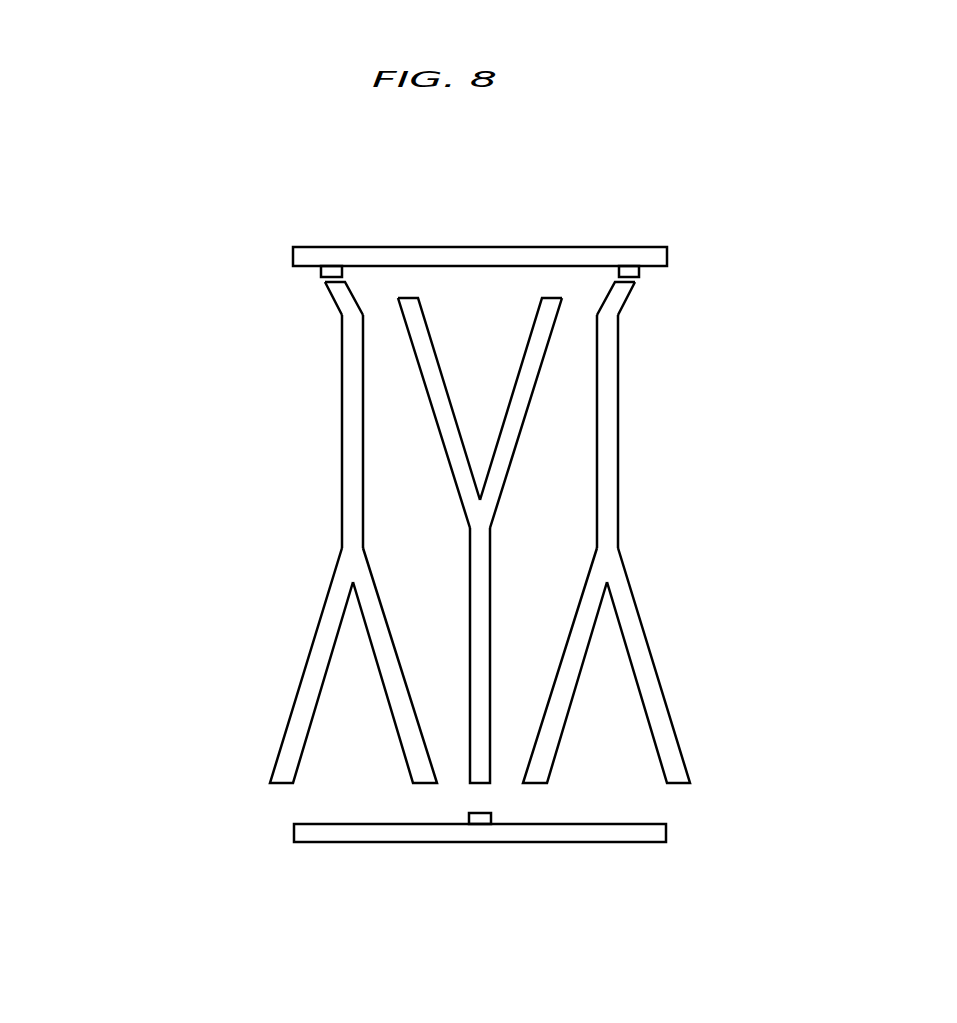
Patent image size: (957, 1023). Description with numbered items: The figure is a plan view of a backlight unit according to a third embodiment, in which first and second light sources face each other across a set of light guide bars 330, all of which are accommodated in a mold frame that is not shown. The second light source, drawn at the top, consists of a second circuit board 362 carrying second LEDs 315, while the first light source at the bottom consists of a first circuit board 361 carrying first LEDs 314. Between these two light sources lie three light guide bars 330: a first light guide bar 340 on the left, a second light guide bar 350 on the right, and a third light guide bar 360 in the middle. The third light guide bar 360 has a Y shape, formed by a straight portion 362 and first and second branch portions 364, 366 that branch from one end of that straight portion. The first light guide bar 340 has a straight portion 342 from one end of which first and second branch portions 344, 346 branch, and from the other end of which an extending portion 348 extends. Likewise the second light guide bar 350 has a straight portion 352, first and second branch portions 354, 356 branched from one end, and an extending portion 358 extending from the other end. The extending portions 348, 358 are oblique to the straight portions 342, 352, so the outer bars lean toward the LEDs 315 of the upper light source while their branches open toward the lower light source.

The first LEDs 314 is at (480, 818).
The second LEDs 315 is at (633, 272).
The light guide bars 330 is at (461, 532).
The first light guide bar 340 is at (232, 532).
The straight portion 342 is at (353, 465).
The first branch portion 344 is at (304, 665).
The second branch portion 346 is at (322, 658).
The extending portion 348 is at (337, 305).
The second light guide bar 350 is at (709, 532).
The straight portion 352 is at (612, 463).
The first branch portion 354 is at (645, 665).
The second branch portion 356 is at (653, 705).
The extending portion 358 is at (612, 302).
The third light guide bar 360 is at (495, 476).
The first circuit board 361 is at (553, 832).
The second circuit board 362 is at (629, 253).
The first branch portion 364 is at (570, 443).
The second branch portion 366 is at (442, 397).